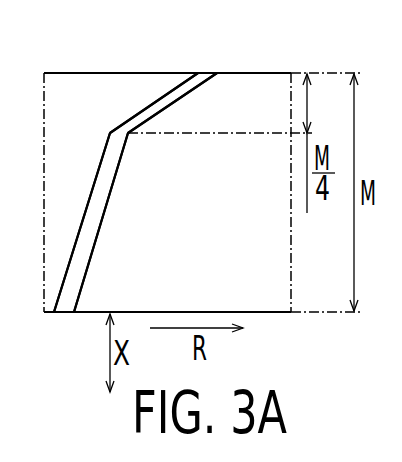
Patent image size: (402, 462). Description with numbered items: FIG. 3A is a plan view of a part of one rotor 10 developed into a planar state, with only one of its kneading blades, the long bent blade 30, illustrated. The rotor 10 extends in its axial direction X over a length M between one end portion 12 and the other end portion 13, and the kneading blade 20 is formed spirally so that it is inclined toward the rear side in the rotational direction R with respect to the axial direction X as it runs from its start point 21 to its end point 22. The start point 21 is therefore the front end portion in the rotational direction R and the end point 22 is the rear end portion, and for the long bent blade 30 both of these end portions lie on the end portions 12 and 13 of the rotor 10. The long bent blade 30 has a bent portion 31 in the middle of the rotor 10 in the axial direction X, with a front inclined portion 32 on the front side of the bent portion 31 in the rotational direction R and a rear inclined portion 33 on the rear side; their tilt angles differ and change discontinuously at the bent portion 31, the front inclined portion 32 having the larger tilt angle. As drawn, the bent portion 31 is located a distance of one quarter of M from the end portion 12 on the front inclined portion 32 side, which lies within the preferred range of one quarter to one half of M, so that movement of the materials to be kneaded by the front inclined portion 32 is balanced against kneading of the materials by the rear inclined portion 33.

The rotor 10 is at (171, 72).
The one end portion 12 is at (92, 73).
The other end portion 13 is at (264, 313).
The kneading blade 20 is at (74, 285).
The start point 21 is at (213, 73).
The end point 22 is at (65, 313).
The long bent blade 30 is at (105, 183).
The bent portion 31 is at (121, 129).
The front inclined portion 32 is at (169, 106).
The rear inclined portion 33 is at (88, 248).